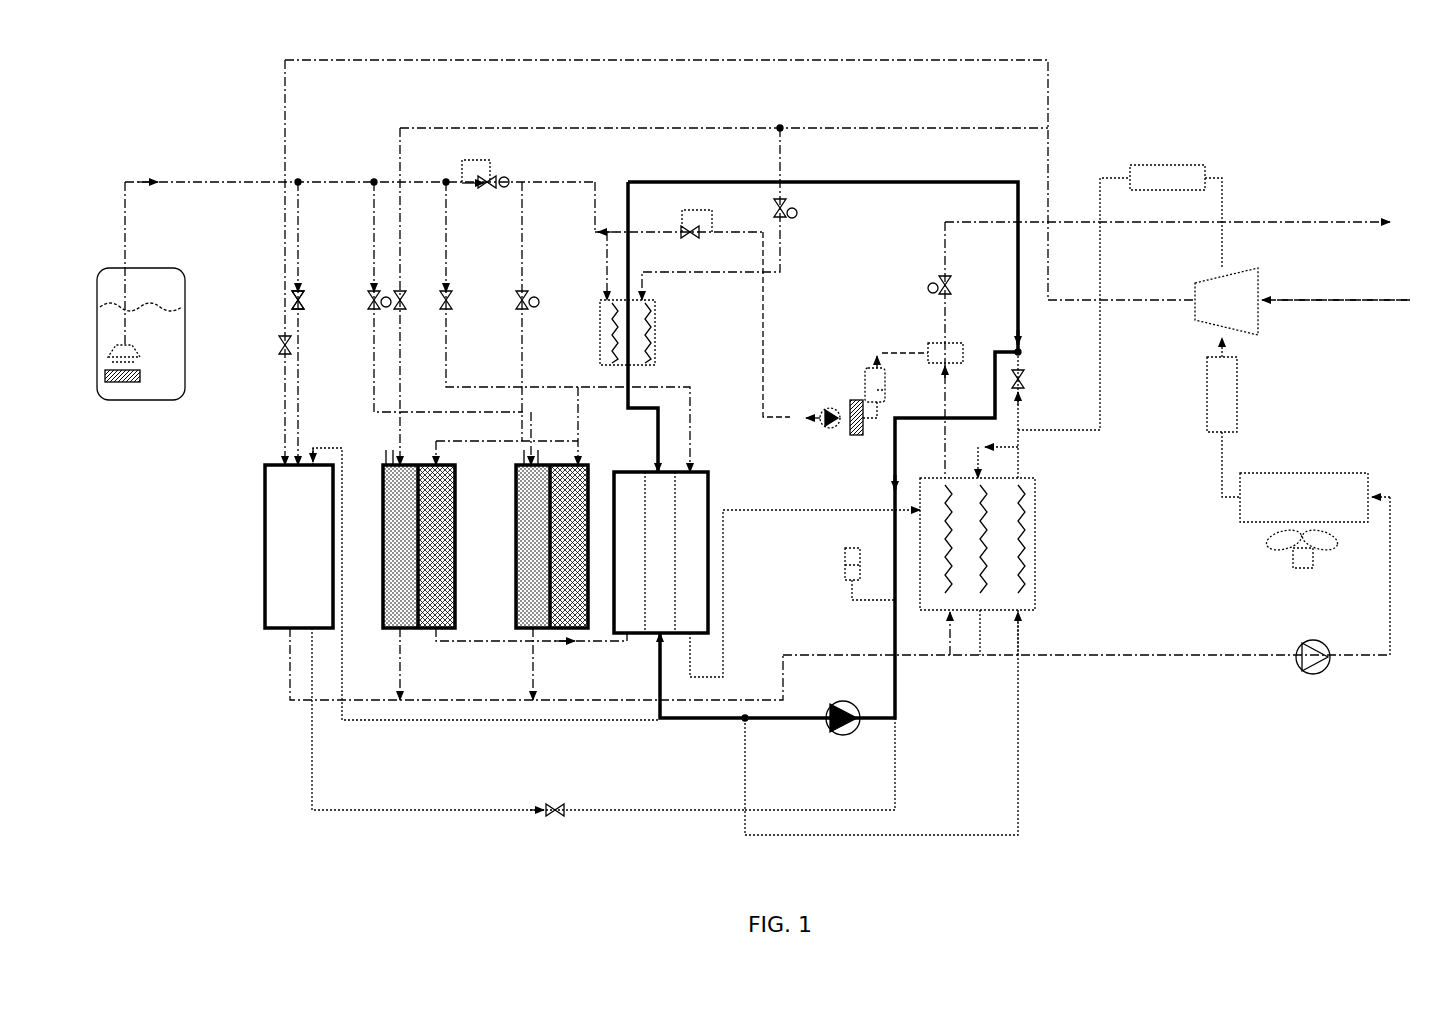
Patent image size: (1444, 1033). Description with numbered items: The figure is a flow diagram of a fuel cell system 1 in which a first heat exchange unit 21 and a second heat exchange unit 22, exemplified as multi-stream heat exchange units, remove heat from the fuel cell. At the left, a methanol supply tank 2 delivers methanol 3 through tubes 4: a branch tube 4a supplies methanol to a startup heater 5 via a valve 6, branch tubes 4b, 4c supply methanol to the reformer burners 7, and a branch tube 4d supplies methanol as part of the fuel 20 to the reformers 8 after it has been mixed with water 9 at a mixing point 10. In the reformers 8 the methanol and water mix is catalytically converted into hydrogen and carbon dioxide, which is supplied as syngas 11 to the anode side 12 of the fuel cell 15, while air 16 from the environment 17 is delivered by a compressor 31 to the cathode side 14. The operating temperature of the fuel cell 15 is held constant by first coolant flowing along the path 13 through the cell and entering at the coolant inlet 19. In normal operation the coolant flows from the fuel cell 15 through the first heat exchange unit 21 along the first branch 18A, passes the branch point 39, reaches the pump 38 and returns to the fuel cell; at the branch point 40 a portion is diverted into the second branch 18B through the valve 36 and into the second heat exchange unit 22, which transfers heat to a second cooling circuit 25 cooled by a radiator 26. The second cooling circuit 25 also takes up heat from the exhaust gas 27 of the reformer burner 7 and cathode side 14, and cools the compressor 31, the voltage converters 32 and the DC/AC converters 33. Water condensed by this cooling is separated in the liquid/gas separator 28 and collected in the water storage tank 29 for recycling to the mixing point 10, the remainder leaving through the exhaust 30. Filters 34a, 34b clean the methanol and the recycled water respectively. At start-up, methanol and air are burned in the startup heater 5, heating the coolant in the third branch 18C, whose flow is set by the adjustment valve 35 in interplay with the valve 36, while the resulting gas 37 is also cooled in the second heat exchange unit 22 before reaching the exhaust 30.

The fuel cell system 1 is at (233, 108).
The methanol supply tank 2 is at (172, 266).
The methanol 3 is at (141, 325).
The tubes 4 is at (178, 182).
The methanol supply tube to startup heater 4a is at (299, 242).
The methanol supply tube to reformer burners 4b is at (373, 267).
The methanol supply tube to reformer burners 4c is at (446, 245).
The methanol supply tube to evaporator 4d is at (595, 198).
The startup heater 5 is at (299, 546).
The valve 6 is at (306, 299).
The reformer burners 7 is at (466, 546).
The reformers 8 is at (485, 546).
The water 9 is at (765, 320).
The mixing point 10 is at (590, 233).
The syngas 11 is at (600, 646).
The anode side 12 is at (630, 555).
The path for first coolant through fuel cell 13 is at (660, 588).
The cathode side 14 is at (690, 555).
The fuel cell 15 is at (710, 492).
The air 16 is at (820, 60).
The environment 17 is at (1350, 301).
The first branch of first cooling circuit 18A is at (878, 184).
The second branch of first cooling circuit 18B is at (1024, 376).
The third branch of first cooling circuit 18C is at (583, 722).
The coolant inlet of fuel cell 19 is at (655, 648).
The fuel 20 is at (502, 390).
The first heat exchange unit 21 is at (655, 356).
The second heat exchange unit 22 is at (1036, 545).
The second cooling circuit 25 is at (1183, 654).
The radiator 26 is at (1315, 565).
The exhaust gas 27 is at (745, 520).
The liquid/gas separator 28 is at (926, 343).
The water storage tank 29 is at (866, 372).
The exhaust 30 is at (1187, 238).
The compressor 31 is at (1226, 312).
The voltage converters 32 is at (1176, 216).
The DC/AC converters 33 is at (1223, 427).
The methanol filter 34a is at (140, 388).
The water filter 34b is at (850, 406).
The adjustment valve in branch 18C 35 is at (568, 806).
The valve in branch 18B 36 is at (1026, 388).
The gas from startup heater 37 is at (472, 700).
The pump 38 is at (834, 736).
The branch point 39 is at (1014, 346).
The branch point 40 is at (740, 722).